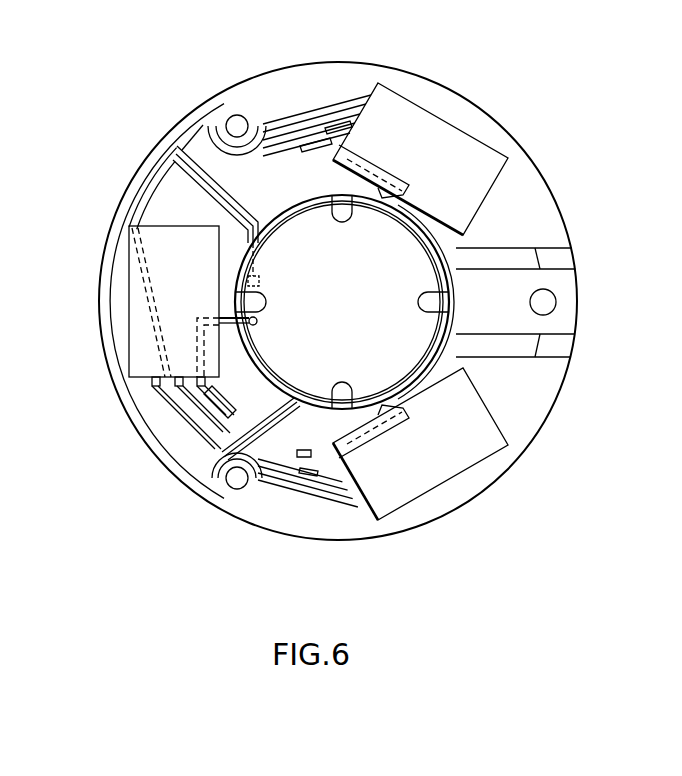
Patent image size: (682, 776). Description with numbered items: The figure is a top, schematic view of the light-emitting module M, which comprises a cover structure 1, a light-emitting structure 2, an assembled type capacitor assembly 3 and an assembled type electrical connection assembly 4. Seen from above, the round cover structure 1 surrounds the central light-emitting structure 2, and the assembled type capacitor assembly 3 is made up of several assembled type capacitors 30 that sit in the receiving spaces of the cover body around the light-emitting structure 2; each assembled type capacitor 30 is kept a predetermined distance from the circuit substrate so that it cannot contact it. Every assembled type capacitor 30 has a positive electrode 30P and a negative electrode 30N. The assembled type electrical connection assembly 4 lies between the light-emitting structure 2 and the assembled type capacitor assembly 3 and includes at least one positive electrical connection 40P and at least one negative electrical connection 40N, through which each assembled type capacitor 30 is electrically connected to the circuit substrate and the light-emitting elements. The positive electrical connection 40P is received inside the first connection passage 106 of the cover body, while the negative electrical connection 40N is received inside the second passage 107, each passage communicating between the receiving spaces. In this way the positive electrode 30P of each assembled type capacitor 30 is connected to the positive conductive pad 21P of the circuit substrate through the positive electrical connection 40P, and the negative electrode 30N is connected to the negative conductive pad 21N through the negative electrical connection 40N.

The light-emitting module M is at (94, 25).
The cover structure 1 is at (112, 208).
The light-emitting structure 2 is at (420, 267).
The assembled type capacitor assembly 3 is at (508, 63).
The assembled type capacitor 30 is at (454, 142).
The negative electrode 30N is at (321, 142).
The positive electrode 30P is at (344, 140).
The assembled type electrical connection assembly 4 is at (127, 118).
The positive electrical connection 40P is at (162, 166).
The negative electrical connection 40N is at (228, 452).
The positive conductive pad 21P is at (262, 281).
The negative conductive pad 21N is at (259, 321).
The first connection passage 106 is at (205, 162).
The second passage 107 is at (300, 405).